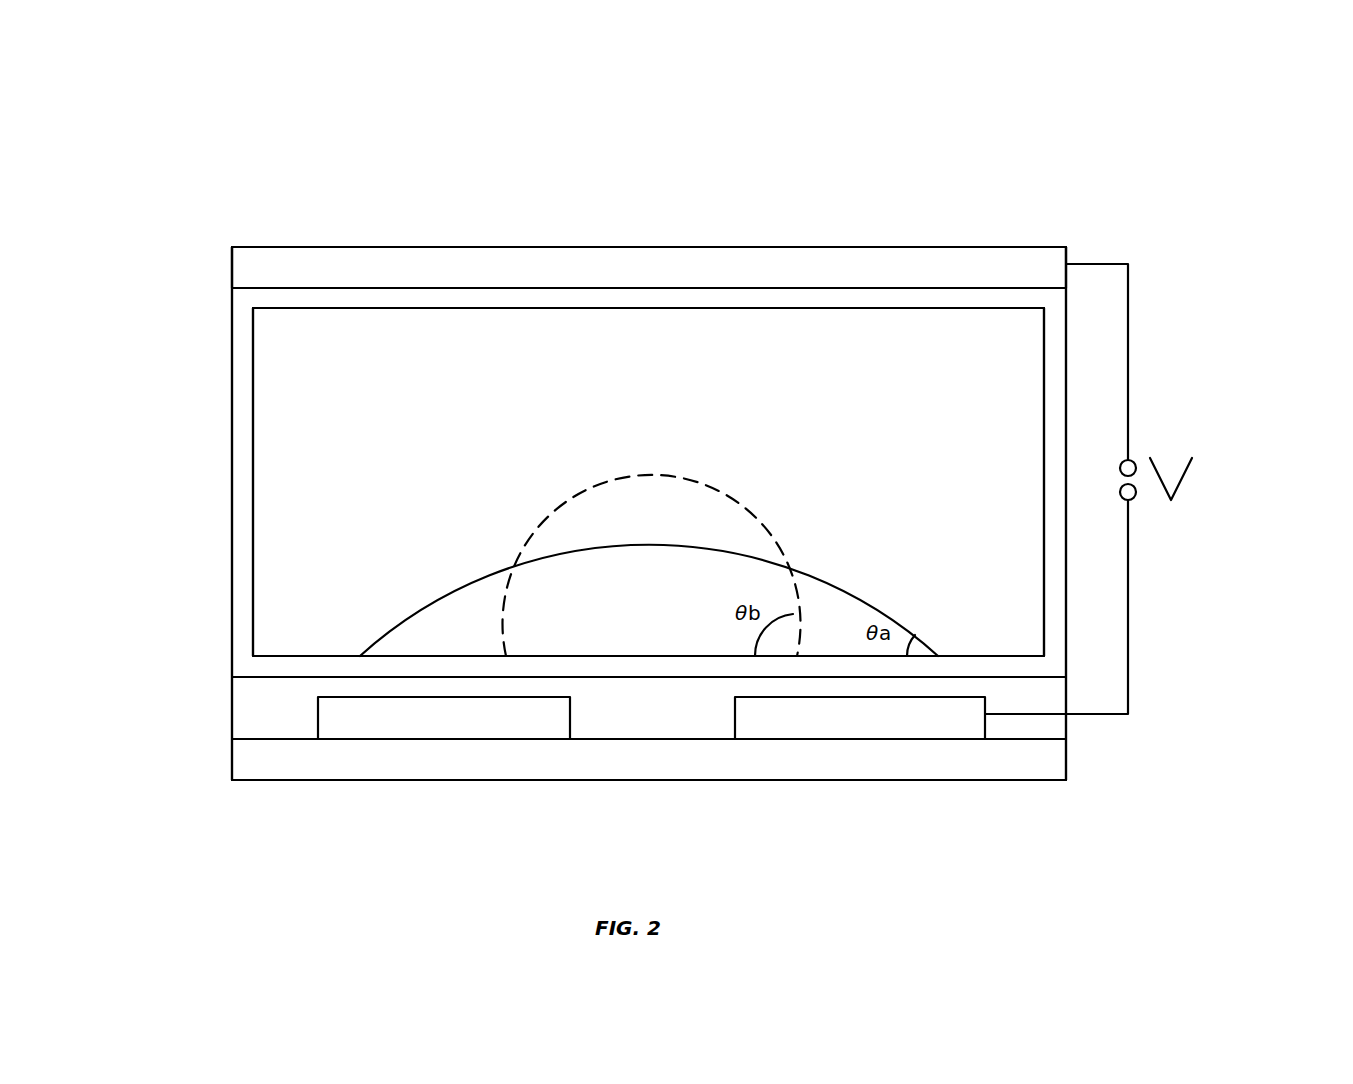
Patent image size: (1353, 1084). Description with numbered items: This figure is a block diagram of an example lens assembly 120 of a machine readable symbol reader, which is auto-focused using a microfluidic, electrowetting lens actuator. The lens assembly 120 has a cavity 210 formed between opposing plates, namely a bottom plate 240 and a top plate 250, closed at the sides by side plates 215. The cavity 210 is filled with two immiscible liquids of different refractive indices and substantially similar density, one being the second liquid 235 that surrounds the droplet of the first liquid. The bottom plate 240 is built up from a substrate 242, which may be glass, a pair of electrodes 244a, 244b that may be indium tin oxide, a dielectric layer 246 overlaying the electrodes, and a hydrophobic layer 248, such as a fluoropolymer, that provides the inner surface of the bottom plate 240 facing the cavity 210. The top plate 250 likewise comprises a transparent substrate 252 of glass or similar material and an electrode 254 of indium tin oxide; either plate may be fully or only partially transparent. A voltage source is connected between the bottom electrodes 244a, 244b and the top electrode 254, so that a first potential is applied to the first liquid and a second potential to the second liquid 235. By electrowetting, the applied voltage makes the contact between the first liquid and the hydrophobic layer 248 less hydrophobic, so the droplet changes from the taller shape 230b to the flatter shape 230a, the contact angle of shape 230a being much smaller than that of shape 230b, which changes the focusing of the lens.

The lens assembly 120 is at (1198, 179).
The top plate 250 is at (232, 272).
The substrate 252 is at (420, 270).
The electrode 254 is at (606, 298).
The second liquid 235 is at (835, 328).
The cavity 210 is at (273, 366).
The side plates 215 is at (232, 490).
The bottom plate 240 is at (232, 713).
The substrate 242 is at (257, 760).
The electrode 244a is at (445, 727).
The electrode 244b is at (860, 725).
The dielectric layer 246 is at (621, 707).
The hydrophobic layer 248 is at (683, 666).
The shape 230a is at (457, 587).
The shape 230b is at (735, 508).